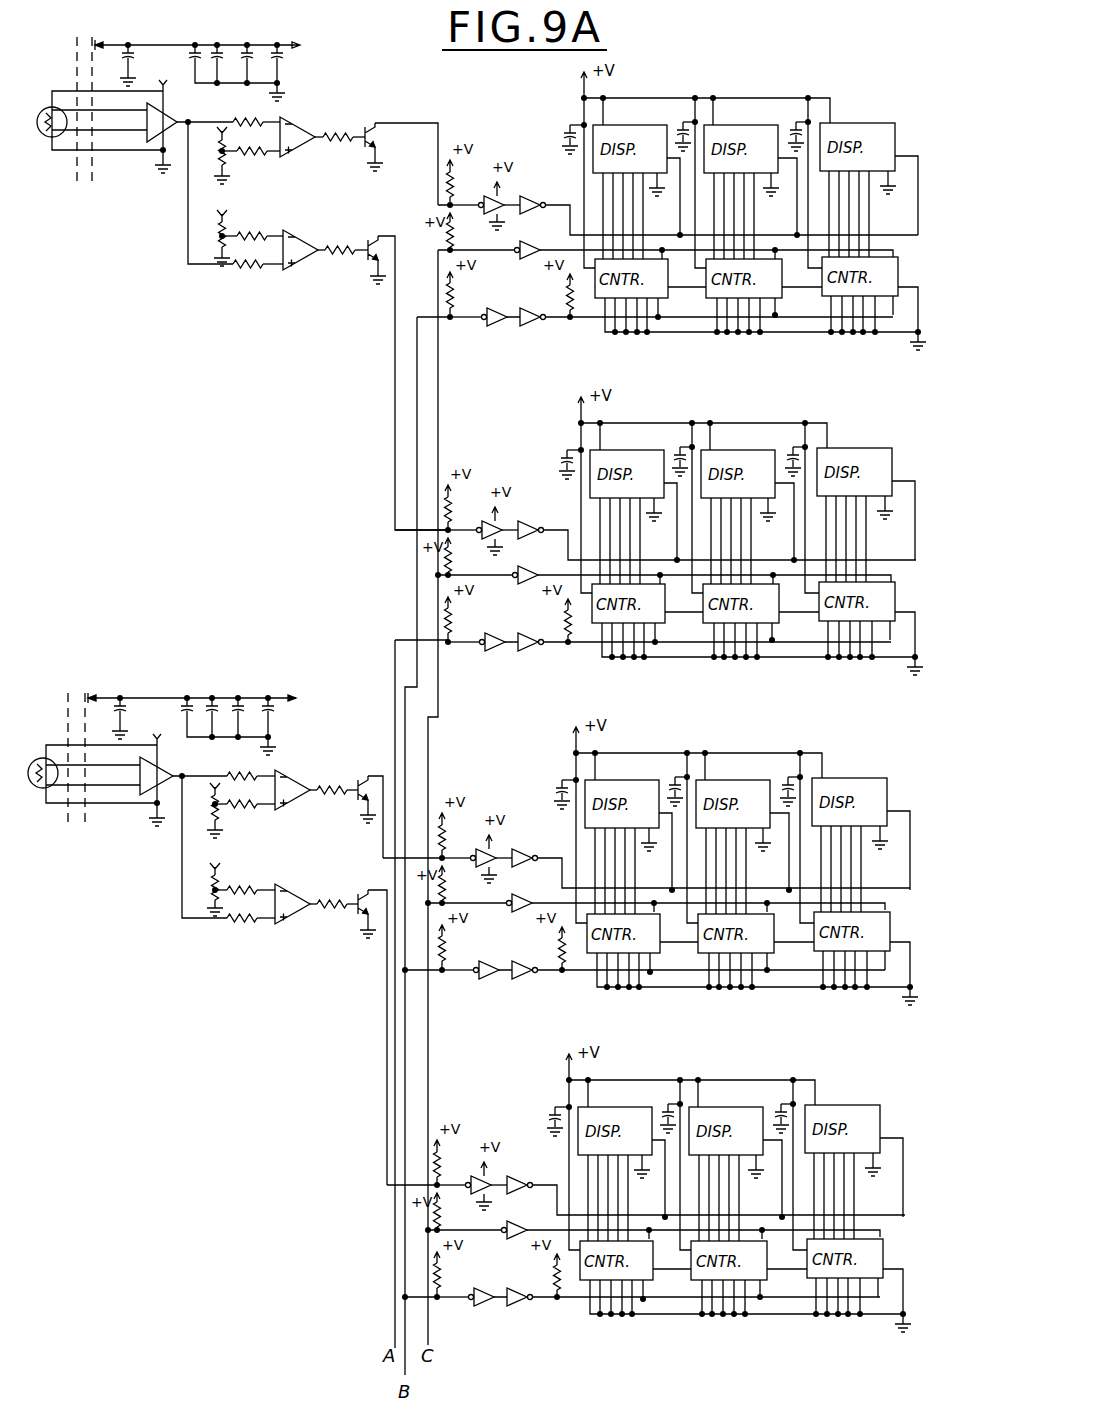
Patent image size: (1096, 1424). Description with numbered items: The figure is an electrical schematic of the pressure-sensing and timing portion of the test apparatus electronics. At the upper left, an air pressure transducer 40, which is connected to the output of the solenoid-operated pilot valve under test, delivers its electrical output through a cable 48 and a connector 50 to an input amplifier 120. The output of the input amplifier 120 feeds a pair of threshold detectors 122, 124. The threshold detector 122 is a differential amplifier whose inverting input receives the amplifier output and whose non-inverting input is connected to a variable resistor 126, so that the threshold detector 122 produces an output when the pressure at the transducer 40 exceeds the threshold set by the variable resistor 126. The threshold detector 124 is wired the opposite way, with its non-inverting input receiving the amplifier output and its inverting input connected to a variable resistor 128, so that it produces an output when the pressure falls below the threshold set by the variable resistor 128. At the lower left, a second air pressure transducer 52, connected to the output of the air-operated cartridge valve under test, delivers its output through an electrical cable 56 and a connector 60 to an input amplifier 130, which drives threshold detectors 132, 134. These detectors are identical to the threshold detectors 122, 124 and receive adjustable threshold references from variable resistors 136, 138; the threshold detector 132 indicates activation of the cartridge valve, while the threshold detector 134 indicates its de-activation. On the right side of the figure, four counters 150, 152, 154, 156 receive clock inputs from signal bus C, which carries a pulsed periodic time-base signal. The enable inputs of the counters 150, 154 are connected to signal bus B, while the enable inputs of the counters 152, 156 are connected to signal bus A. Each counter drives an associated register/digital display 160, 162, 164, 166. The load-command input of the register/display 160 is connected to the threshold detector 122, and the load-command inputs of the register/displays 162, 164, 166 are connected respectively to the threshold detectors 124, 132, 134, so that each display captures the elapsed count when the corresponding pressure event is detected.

The air pressure transducer 40 is at (44, 90).
The cable 48 is at (86, 162).
The connector 50 is at (94, 176).
The second air pressure transducer 52 is at (51, 743).
The electrical cable 56 is at (78, 812).
The connector 60 is at (86, 822).
The input amplifier 120 is at (175, 121).
The threshold detector 122 is at (311, 122).
The threshold detector 124 is at (309, 233).
The variable resistor 126 is at (231, 161).
The variable resistor 128 is at (231, 219).
The input amplifier 130 is at (168, 765).
The threshold detector 132 is at (303, 775).
The threshold detector 134 is at (296, 881).
The variable resistor 136 is at (224, 818).
The variable resistor 138 is at (222, 876).
The counter 150 is at (539, 332).
The counter 152 is at (560, 656).
The counter 154 is at (559, 985).
The counter 156 is at (552, 1313).
The register/digital display 160 is at (864, 107).
The register/digital display 162 is at (863, 444).
The register/digital display 164 is at (863, 773).
The register/digital display 166 is at (853, 1101).